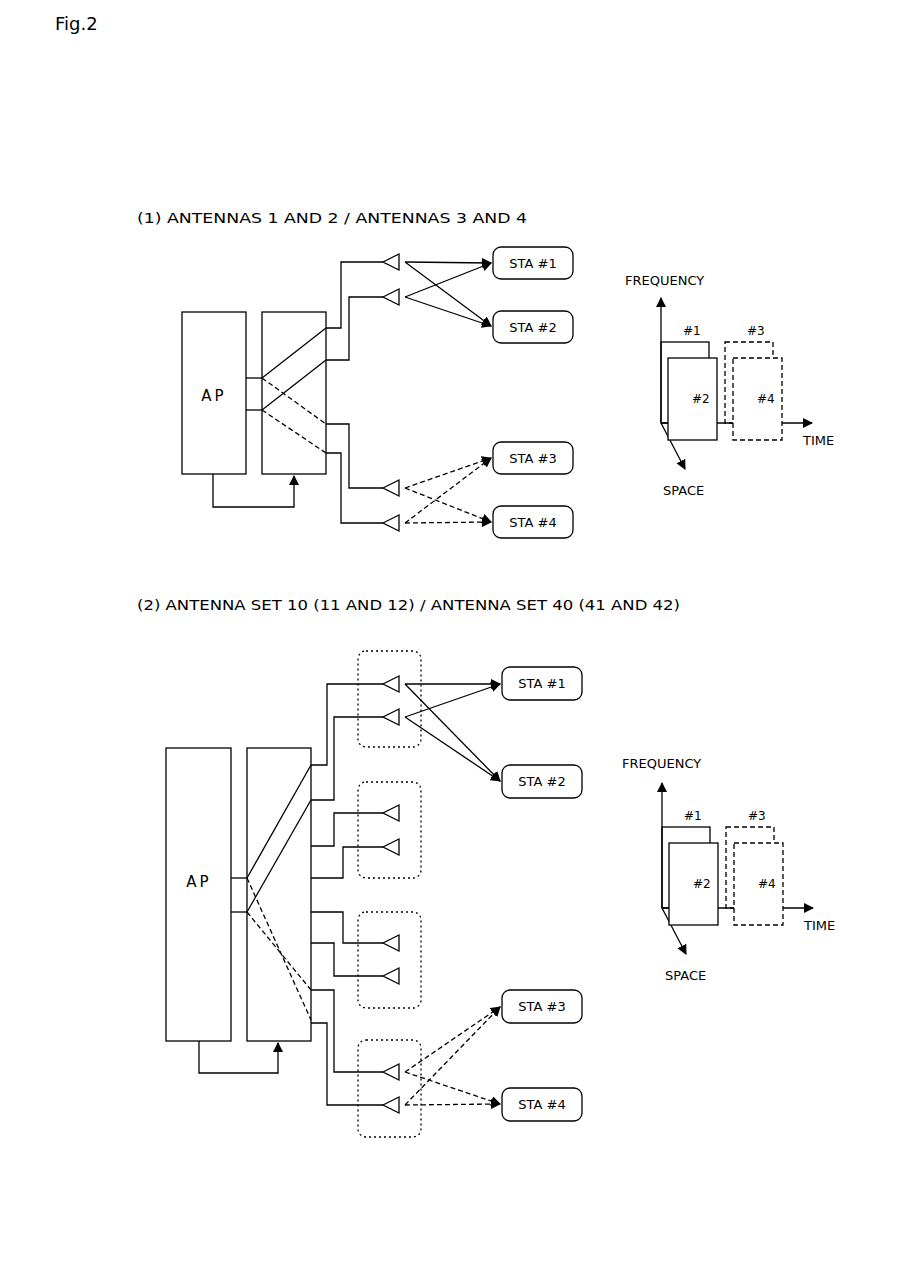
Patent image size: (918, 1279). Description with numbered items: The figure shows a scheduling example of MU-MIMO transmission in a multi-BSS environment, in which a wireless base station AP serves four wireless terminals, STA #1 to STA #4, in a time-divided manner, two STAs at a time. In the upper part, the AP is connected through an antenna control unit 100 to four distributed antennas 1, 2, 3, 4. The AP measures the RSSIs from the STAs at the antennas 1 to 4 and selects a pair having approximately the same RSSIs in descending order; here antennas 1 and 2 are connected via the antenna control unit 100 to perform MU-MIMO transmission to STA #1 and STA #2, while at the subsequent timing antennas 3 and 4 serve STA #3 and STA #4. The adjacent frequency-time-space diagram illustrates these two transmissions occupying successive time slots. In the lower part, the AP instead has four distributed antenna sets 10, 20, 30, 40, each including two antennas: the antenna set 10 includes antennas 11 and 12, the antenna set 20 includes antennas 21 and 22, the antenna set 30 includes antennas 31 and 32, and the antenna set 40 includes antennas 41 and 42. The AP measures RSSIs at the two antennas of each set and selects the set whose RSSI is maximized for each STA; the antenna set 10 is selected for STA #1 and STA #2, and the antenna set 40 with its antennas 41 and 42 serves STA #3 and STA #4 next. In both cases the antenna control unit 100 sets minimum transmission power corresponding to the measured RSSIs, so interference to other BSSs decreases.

The antenna control unit 100 is at (288, 312).
The antenna 1 is at (362, 285).
The antenna 2 is at (362, 319).
The antenna 3 is at (362, 460).
The antenna 4 is at (362, 492).
The antenna set 10 is at (378, 651).
The antenna 11 is at (355, 715).
The antenna 12 is at (355, 749).
The antenna set 20 is at (378, 782).
The antenna 21 is at (355, 820).
The antenna 22 is at (355, 852).
The antenna set 30 is at (378, 912).
The antenna 31 is at (355, 931).
The antenna 32 is at (355, 963).
The antenna set 40 is at (378, 1040).
The antenna 41 is at (355, 1035).
The antenna 42 is at (355, 1068).